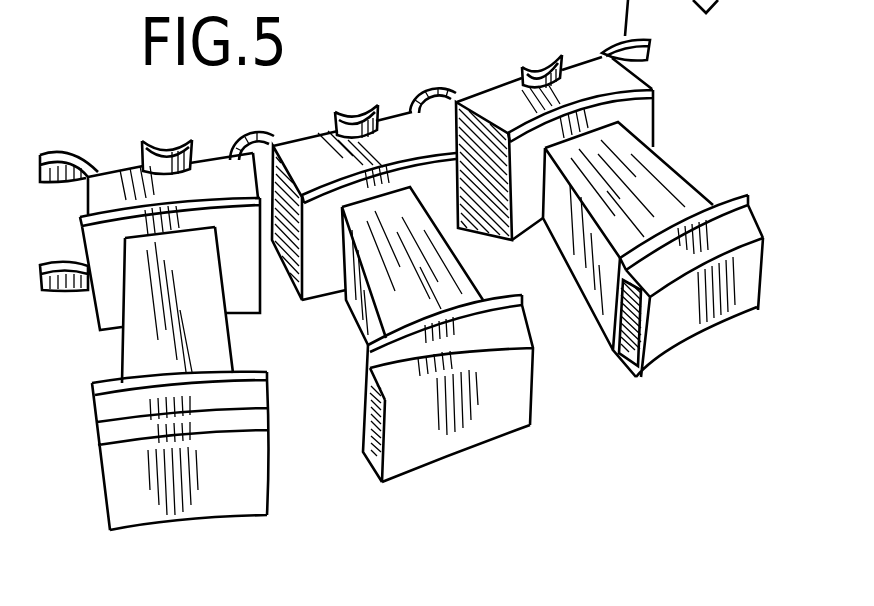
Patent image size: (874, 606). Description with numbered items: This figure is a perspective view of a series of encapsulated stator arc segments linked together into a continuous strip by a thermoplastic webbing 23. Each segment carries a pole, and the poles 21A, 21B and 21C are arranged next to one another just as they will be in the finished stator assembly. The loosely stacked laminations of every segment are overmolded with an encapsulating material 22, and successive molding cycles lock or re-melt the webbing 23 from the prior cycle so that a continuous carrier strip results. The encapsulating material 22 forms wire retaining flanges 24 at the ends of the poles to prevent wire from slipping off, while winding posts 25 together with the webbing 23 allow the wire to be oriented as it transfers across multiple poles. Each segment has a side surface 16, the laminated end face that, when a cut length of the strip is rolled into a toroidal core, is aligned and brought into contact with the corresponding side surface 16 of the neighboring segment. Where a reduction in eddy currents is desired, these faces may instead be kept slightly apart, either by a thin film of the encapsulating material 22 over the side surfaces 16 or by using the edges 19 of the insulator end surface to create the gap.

The side surface 16 is at (471, 150).
The edges of the insulator end surface 19 is at (447, 107).
The pole 21A is at (222, 485).
The pole 21B is at (477, 417).
The pole 21C is at (653, 269).
The encapsulating material 22 is at (673, 187).
The webbing 23 is at (62, 152).
The wire retaining flanges 24 is at (640, 107).
The winding posts 25 is at (556, 56).